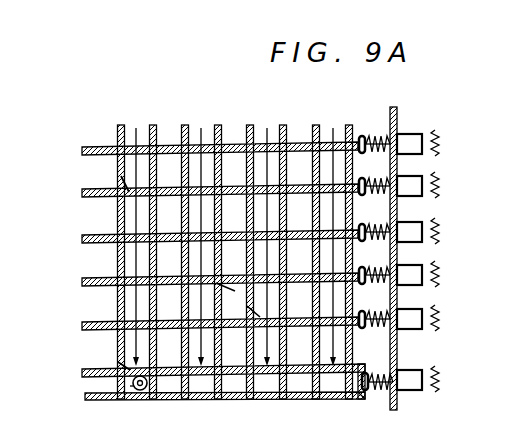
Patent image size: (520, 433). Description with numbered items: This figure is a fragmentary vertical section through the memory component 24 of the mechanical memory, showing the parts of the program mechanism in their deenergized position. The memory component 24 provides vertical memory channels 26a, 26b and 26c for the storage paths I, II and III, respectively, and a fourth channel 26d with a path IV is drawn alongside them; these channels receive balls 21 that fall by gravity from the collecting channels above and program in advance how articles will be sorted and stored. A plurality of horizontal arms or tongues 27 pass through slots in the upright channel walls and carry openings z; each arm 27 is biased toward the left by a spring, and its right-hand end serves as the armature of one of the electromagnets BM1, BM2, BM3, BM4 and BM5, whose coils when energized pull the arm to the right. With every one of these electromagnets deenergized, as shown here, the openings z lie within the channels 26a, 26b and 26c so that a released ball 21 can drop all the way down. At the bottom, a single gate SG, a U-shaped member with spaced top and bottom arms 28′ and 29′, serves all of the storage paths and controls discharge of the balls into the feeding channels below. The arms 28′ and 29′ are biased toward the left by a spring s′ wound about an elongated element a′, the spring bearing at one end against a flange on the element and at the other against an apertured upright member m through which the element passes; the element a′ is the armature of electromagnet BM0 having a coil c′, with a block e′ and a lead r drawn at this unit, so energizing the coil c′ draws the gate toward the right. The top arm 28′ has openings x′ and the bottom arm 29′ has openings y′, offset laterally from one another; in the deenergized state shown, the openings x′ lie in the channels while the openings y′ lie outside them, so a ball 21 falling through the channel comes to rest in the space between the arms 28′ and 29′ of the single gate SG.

The vertical memory channel 26a is at (151, 125).
The vertical memory channel 26b is at (217, 125).
The vertical memory channel 26c is at (284, 125).
The fourth pair of vertical grid bars 26d is at (350, 125).
The storage path I is at (135, 233).
The storage path II is at (202, 233).
The storage path III is at (267, 233).
The fourth conductor wire IV is at (331, 233).
The openings z is at (124, 188).
The horizontal arms 27 is at (86, 198).
The memory component 24 is at (117, 298).
The top arm 28′ is at (88, 371).
The bottom arm 29′ is at (86, 398).
The openings x′ is at (125, 364).
The openings y′ is at (110, 396).
The ball 21 is at (150, 392).
The single gate SG is at (284, 401).
The apertured upright member m is at (402, 353).
The spring s′ is at (365, 391).
The elongated element a′ is at (372, 373).
The bimetal block e′ is at (415, 391).
The coil c′ is at (436, 392).
The lead r is at (359, 397).
The electromagnet BM1 is at (423, 133).
The electromagnet BM2 is at (424, 186).
The electromagnet BM3 is at (425, 231).
The electromagnet BM4 is at (426, 274).
The electromagnet BM5 is at (429, 318).
The electromagnet BM0 is at (425, 386).